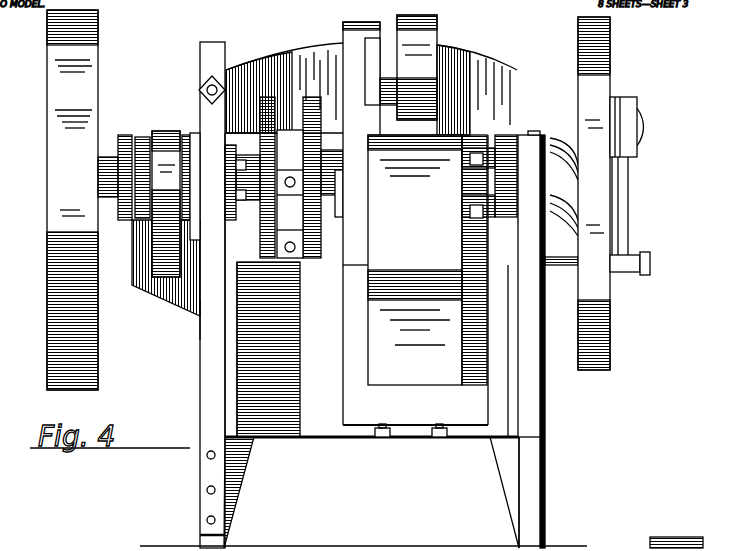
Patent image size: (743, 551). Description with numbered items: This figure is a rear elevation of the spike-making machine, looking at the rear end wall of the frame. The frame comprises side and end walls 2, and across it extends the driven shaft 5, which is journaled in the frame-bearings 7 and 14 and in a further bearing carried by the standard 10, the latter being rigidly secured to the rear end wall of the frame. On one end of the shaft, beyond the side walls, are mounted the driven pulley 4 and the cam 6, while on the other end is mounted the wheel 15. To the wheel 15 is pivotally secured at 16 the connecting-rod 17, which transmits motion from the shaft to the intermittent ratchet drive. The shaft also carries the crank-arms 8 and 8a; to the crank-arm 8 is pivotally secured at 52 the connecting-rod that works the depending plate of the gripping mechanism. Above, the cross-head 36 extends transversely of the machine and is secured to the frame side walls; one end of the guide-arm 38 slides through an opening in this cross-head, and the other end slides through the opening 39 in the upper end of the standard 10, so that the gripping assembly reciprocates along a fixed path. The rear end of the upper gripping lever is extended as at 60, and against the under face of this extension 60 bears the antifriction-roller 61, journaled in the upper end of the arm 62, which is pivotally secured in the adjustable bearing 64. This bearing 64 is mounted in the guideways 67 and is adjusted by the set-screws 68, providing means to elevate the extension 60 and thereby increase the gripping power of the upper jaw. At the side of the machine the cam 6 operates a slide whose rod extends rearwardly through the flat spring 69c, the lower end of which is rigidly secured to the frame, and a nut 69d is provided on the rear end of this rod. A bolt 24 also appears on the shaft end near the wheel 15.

The side and end walls 2 is at (240, 497).
The driven pulley 4 is at (72, 200).
The driven shaft 5 is at (107, 200).
The cam 6 is at (160, 128).
The frame-bearing 7 is at (153, 296).
The crank-arm 8 is at (311, 156).
The crank-arm 8a is at (505, 177).
The standard 10 is at (355, 55).
The frame-bearing 14 is at (530, 143).
The wheel 15 is at (612, 65).
The pivot 16 is at (648, 118).
The connecting-rod 17 is at (630, 215).
The bolt 24 is at (652, 265).
The cross-head 36 is at (263, 60).
The guide-arm 38 is at (370, 82).
The opening 39 is at (372, 55).
The pivot 52 is at (283, 213).
The extension 60 is at (437, 38).
The antifriction-roller 61 is at (440, 82).
The arm 62 is at (428, 133).
The adjustable bearing 64 is at (415, 260).
The guideways 67 is at (353, 308).
The set-screws 68 is at (382, 440).
The flat spring 69c is at (207, 330).
The nut 69d is at (205, 83).